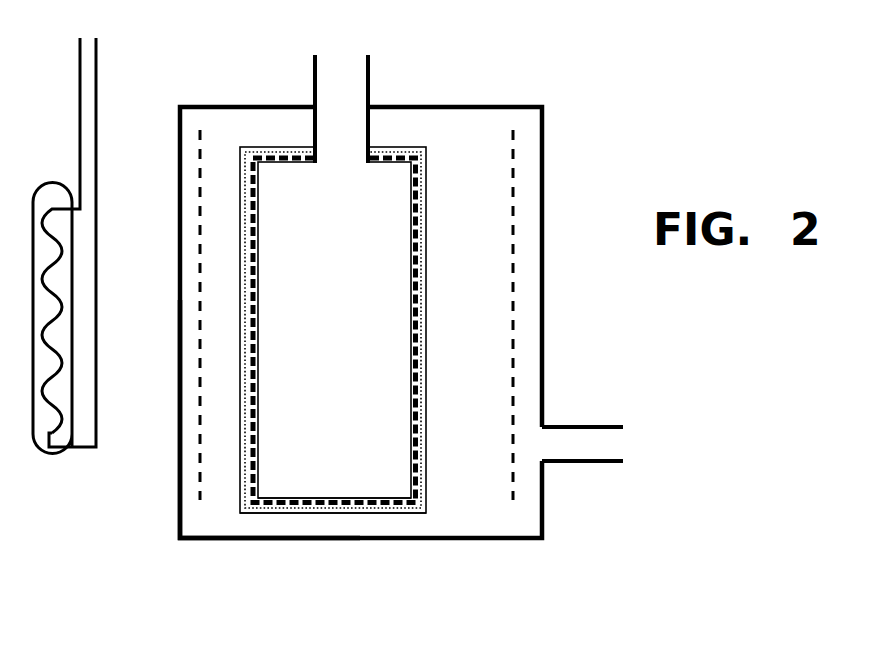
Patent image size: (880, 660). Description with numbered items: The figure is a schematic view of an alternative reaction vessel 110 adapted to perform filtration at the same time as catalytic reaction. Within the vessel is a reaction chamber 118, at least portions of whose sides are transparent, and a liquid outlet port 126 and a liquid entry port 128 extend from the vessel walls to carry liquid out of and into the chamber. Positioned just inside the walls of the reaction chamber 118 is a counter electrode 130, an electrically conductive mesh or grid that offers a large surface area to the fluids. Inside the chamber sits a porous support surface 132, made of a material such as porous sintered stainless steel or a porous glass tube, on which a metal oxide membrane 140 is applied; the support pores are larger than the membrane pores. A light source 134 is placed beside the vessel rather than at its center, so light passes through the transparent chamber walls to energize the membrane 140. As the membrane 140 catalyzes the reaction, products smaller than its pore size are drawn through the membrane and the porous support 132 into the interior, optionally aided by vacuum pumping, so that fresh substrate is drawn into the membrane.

The reaction vessel 110 is at (545, 543).
The reaction chamber 118 is at (248, 541).
The liquid outlet port 126 is at (370, 87).
The liquid entry port 128 is at (588, 463).
The counter electrode 130 is at (515, 322).
The support surface 132 is at (258, 366).
The light source 134 is at (60, 455).
The metal oxide membrane 140 is at (382, 515).